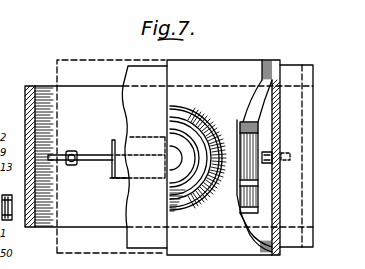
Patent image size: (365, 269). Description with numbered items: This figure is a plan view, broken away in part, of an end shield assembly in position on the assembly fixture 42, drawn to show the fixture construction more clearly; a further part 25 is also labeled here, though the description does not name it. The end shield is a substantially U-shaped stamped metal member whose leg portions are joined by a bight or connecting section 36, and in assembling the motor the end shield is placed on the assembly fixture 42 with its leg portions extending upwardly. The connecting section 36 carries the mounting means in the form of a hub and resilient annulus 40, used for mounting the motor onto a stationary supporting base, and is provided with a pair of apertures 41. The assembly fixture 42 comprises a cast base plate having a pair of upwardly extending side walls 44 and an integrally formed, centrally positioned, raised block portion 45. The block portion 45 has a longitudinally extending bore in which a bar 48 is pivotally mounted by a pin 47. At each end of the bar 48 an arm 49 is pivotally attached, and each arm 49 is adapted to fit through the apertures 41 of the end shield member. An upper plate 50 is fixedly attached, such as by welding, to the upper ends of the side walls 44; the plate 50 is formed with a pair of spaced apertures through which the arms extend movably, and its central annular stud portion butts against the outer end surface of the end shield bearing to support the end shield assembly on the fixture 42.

The worm gear housing member 25 is at (247, 123).
The bight or connecting section 36 is at (239, 63).
The hub and resilient annulus 40 is at (194, 122).
The apertures 41 is at (273, 146).
The assembly fixture 42 is at (104, 46).
The side walls 44 is at (25, 107).
The raised block portion 45 is at (118, 180).
The pin 47 is at (166, 137).
The bar 48 is at (97, 153).
The arm 49 is at (72, 150).
The upper plate 50 is at (292, 72).